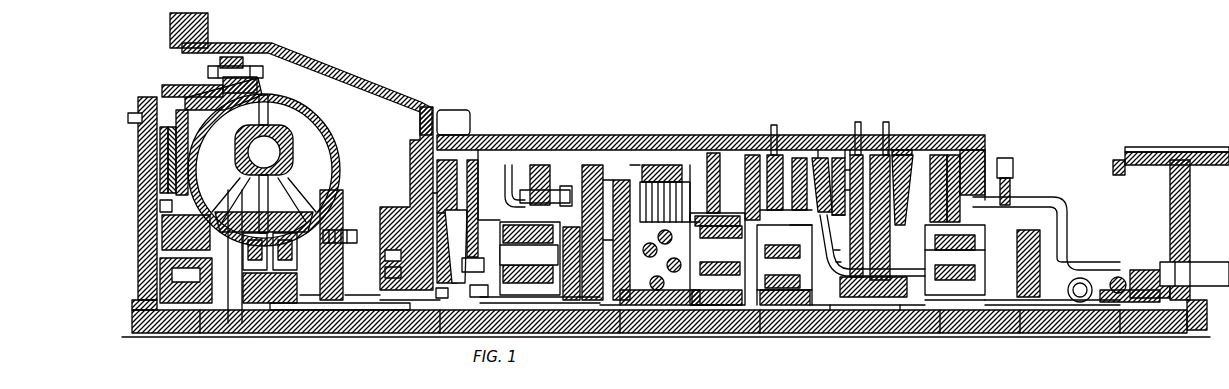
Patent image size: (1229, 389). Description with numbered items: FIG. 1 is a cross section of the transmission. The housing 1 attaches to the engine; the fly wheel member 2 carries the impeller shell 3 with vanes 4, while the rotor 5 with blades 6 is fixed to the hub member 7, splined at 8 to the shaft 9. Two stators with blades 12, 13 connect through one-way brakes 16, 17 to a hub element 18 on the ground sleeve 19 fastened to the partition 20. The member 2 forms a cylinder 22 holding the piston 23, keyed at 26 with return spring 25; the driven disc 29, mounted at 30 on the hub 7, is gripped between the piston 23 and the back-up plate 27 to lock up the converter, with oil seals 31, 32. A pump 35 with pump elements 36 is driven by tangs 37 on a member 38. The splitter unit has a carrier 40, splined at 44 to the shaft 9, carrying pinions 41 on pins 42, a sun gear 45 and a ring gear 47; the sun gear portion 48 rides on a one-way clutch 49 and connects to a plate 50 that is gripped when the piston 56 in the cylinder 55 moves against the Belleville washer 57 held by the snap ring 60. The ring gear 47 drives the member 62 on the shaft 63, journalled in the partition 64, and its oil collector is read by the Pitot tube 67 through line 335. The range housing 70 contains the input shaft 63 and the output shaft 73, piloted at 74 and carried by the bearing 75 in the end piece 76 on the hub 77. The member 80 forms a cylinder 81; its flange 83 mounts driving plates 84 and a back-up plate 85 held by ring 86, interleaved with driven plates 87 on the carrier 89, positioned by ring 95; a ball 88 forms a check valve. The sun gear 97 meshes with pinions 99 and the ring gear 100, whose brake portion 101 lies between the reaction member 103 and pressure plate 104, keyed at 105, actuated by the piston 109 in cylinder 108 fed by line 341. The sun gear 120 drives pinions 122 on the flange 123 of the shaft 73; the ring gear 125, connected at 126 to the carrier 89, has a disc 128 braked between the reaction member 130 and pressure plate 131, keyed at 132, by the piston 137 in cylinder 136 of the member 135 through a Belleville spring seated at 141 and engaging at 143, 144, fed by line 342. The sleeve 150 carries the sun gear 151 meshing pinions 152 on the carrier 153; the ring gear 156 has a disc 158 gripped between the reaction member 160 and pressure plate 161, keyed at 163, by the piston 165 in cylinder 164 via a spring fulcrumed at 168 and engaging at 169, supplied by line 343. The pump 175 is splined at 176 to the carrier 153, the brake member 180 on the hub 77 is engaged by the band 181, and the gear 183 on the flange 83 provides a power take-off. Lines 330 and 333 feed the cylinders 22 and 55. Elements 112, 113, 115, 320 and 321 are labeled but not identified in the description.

The housing 1 is at (300, 53).
The fly wheel member 2 is at (224, 75).
The shell 3 is at (334, 130).
The blades or vanes 4 is at (325, 157).
The rotor 5 is at (190, 144).
The rotor blades 6 is at (247, 117).
The hub member 7 is at (172, 242).
The spline connection 8 is at (192, 317).
The shaft 9 is at (262, 325).
The stator blades 12 is at (258, 208).
The stator blades 13 is at (290, 210).
The one-way brake 16 is at (255, 260).
The one-way brake 17 is at (285, 260).
The hub element 18 is at (270, 288).
The ground sleeve 19 is at (340, 325).
The partition 20 is at (418, 178).
The cylinder 22 is at (155, 105).
The annular piston 23 is at (150, 170).
The return spring 25 is at (180, 118).
The key 26 is at (140, 124).
The clutch back-up plate 27 is at (178, 165).
The driven disc 29 is at (172, 180).
The mounting 30 is at (160, 210).
The oil seal 31 is at (165, 247).
The oil seal 32 is at (172, 103).
The pump 35 is at (385, 213).
The pump elements 36 is at (378, 246).
The tangs 37 is at (385, 318).
The drive member 38 is at (350, 253).
The carrier 40 is at (541, 241).
The pinion gears 41 is at (513, 240).
The pin 42 is at (535, 262).
The spline 44 is at (540, 305).
The sun gear 45 is at (530, 300).
The ring gear 47 is at (546, 166).
The larger-diameter portion 48 is at (473, 265).
The one-way clutch 49 is at (479, 297).
The brake plate 50 is at (461, 221).
The cylinder 55 is at (432, 193).
The piston 56 is at (440, 175).
The Belleville washer 57 is at (440, 233).
The snap ring 60 is at (441, 294).
The torque transmitting member 62 is at (583, 210).
The shaft 63 is at (650, 320).
The dividing partition 64 is at (606, 196).
The Pitot tube 67 is at (516, 166).
The housing 70 is at (592, 135).
The output shaft 73 is at (905, 318).
The pilot 74 is at (855, 316).
The bearing 75 is at (1118, 278).
The housing end piece 76 is at (1062, 200).
The hub 77 is at (1150, 289).
The clutch member 80 is at (632, 180).
The cylinder 81 is at (612, 225).
The peripheral flange 83 is at (660, 172).
The driving clutch plates 84 is at (688, 165).
The back-up plate 85 is at (700, 165).
The ring 86 is at (707, 180).
The driven clutch plates 87 is at (612, 240).
The ball 88 is at (645, 195).
The carrier 89 is at (686, 267).
The ring 95 is at (700, 300).
The sun gear 97 is at (717, 296).
The pinions 99 is at (717, 259).
The ring gear 100 is at (714, 213).
The disc-like outer portion 101 is at (721, 231).
The fixed reaction member 103 is at (720, 150).
The pressure plate 104 is at (735, 150).
The slidable connection 105 is at (748, 150).
The cylinder 108 is at (806, 150).
The piston 109 is at (800, 150).
The pin 112 is at (773, 125).
The bearing housing 113 is at (784, 253).
The wedge 115 is at (786, 150).
The sun gear 120 is at (780, 315).
The pinions 122 is at (785, 272).
The flange 123 is at (820, 315).
The ring gear 125 is at (799, 221).
The connection 126 is at (782, 243).
The disc portion 128 is at (872, 245).
The reaction member 130 is at (819, 152).
The pressure plate 131 is at (833, 216).
The key 132 is at (844, 152).
The cylinder member 135 is at (902, 190).
The cylinder 136 is at (876, 150).
The piston 137 is at (830, 251).
The spring seat 141 is at (839, 171).
The spring engagement 143 is at (831, 263).
The spring engagement 144 is at (842, 191).
The sleeve 150 is at (850, 306).
The sun gear 151 is at (960, 300).
The pinions 152 is at (975, 246).
The carrier 153 is at (975, 275).
The ring gear 156 is at (970, 231).
The disc-like outer peripheral portion 158 is at (1005, 158).
The reaction member 160 is at (986, 152).
The pressure plate 161 is at (935, 188).
The key 163 is at (940, 150).
The cylinder 164 is at (878, 217).
The piston 165 is at (928, 195).
The spring fulcrum 168 is at (900, 150).
The spring engagement 169 is at (883, 226).
The pump 175 is at (1030, 230).
The spline 176 is at (1052, 315).
The brake member 180 is at (1170, 208).
The brake band 181 is at (1215, 152).
The gear 183 is at (680, 165).
The plate 320 is at (358, 325).
The channel 321 is at (228, 325).
The line 330 is at (285, 325).
The line 333 is at (401, 254).
The line 335 is at (513, 215).
The line 341 is at (800, 130).
The line 342 is at (855, 125).
The line 343 is at (890, 125).